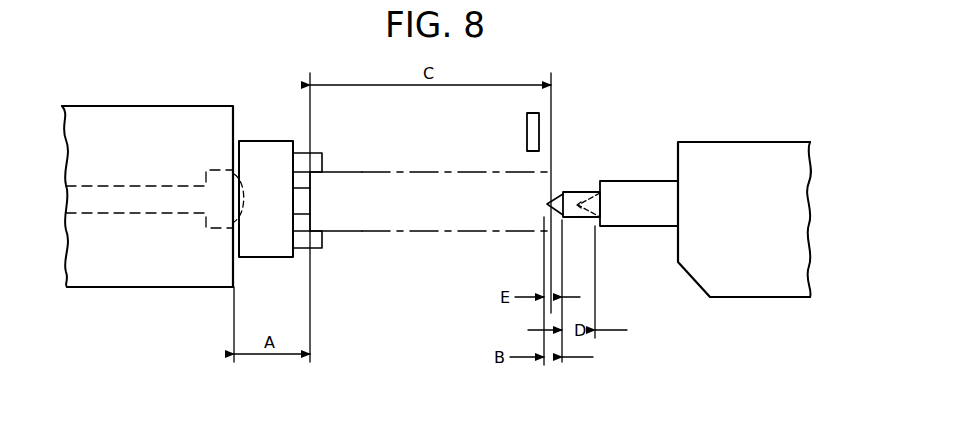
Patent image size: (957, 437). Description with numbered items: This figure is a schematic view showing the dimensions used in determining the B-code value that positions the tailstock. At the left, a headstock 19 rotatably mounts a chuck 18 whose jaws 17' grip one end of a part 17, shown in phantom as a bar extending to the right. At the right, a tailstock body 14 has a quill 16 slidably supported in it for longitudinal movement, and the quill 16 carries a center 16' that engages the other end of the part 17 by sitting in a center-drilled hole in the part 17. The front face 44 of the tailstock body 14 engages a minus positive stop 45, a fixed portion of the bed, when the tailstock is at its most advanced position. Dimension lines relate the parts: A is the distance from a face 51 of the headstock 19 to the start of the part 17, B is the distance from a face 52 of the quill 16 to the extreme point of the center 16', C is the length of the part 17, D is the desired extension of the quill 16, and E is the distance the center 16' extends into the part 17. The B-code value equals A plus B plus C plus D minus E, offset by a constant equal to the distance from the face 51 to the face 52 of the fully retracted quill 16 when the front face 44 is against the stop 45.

The tailstock body 14 is at (733, 300).
The quill 16 is at (588, 186).
The center 16' is at (579, 161).
The part 17 is at (430, 219).
The jaws 17' is at (331, 208).
The chuck 18 is at (283, 141).
The headstock 19 is at (172, 292).
The front face 44 is at (678, 240).
The minus positive stop 45 is at (527, 130).
The face 51 is at (235, 272).
The face 52 is at (548, 213).